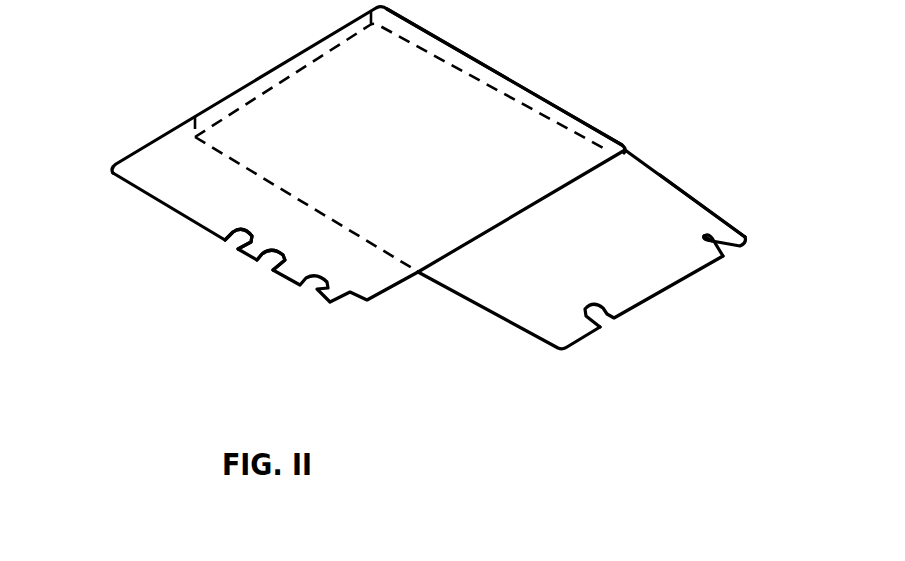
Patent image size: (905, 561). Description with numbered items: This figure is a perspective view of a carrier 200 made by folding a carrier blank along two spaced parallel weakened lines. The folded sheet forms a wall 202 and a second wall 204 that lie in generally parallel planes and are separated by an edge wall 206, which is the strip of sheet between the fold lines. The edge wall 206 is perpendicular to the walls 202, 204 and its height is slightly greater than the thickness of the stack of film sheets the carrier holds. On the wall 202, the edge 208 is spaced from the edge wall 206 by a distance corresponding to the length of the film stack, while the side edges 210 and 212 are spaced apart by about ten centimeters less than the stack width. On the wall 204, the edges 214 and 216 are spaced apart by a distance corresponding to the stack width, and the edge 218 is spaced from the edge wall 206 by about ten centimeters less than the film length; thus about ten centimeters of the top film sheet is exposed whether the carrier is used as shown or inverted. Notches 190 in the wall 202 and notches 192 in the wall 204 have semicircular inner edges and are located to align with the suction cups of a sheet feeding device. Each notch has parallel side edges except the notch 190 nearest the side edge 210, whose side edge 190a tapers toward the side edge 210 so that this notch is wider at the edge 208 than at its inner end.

The carrier 200 is at (117, 298).
The wall 202 is at (643, 192).
The second wall 204 is at (406, 151).
The edge wall 206 is at (224, 98).
The edge 208 is at (737, 247).
The side edge 210 is at (708, 210).
The side edge 212 is at (515, 330).
The edge 214 is at (517, 78).
The edge 216 is at (282, 278).
The edge 218 is at (545, 200).
The notches or holes 190 is at (613, 320).
The side edge 190a is at (730, 250).
The notches 192 is at (237, 243).